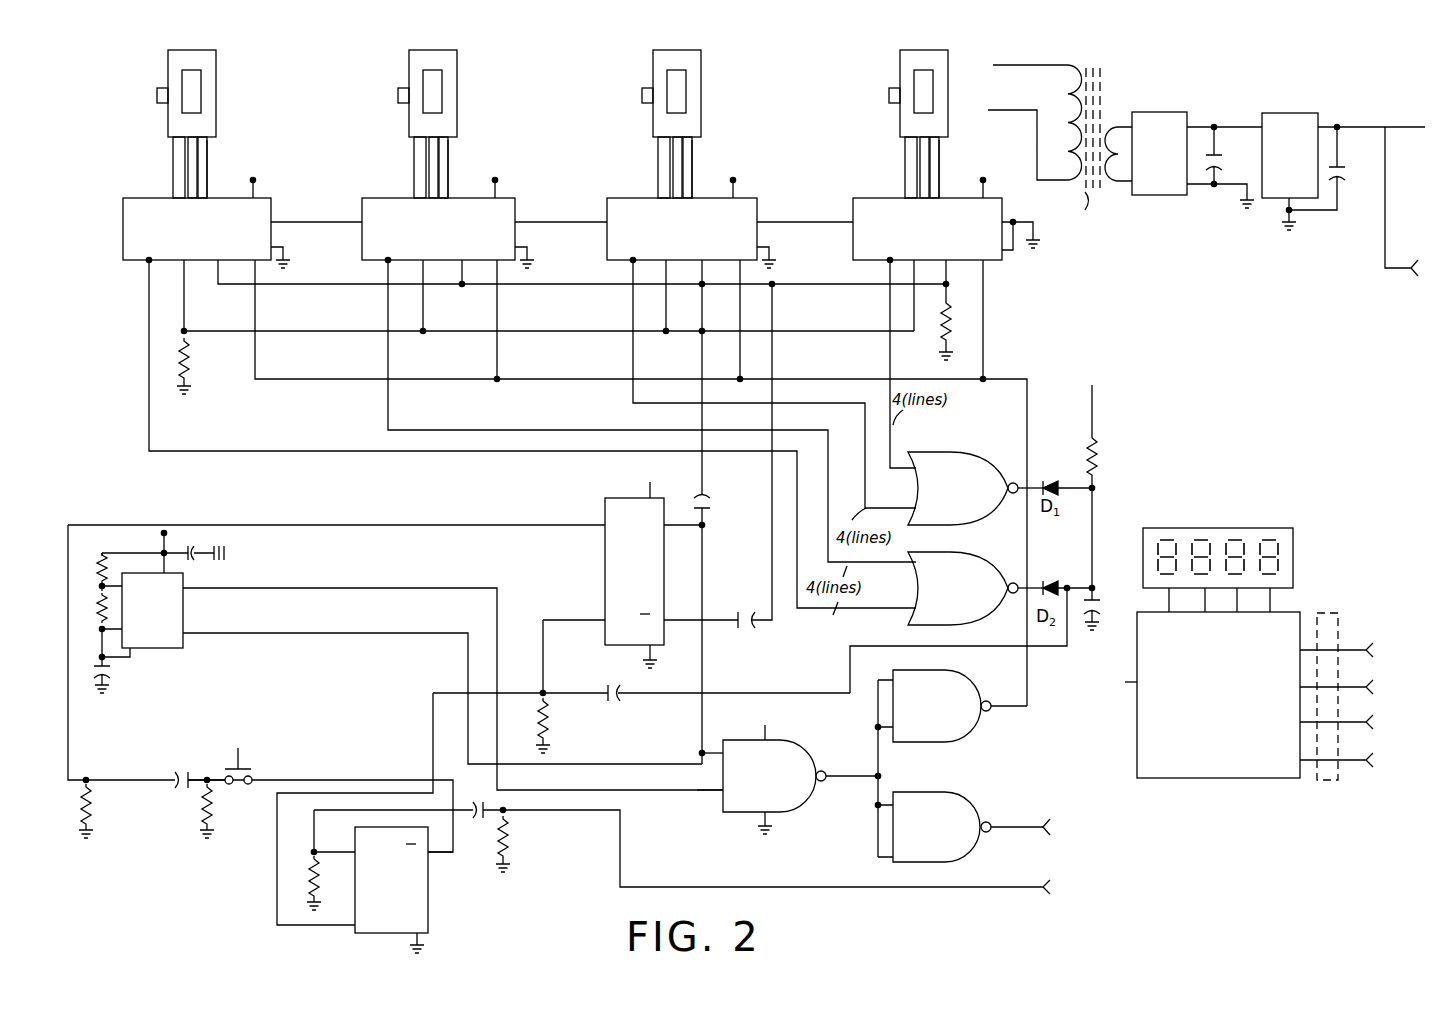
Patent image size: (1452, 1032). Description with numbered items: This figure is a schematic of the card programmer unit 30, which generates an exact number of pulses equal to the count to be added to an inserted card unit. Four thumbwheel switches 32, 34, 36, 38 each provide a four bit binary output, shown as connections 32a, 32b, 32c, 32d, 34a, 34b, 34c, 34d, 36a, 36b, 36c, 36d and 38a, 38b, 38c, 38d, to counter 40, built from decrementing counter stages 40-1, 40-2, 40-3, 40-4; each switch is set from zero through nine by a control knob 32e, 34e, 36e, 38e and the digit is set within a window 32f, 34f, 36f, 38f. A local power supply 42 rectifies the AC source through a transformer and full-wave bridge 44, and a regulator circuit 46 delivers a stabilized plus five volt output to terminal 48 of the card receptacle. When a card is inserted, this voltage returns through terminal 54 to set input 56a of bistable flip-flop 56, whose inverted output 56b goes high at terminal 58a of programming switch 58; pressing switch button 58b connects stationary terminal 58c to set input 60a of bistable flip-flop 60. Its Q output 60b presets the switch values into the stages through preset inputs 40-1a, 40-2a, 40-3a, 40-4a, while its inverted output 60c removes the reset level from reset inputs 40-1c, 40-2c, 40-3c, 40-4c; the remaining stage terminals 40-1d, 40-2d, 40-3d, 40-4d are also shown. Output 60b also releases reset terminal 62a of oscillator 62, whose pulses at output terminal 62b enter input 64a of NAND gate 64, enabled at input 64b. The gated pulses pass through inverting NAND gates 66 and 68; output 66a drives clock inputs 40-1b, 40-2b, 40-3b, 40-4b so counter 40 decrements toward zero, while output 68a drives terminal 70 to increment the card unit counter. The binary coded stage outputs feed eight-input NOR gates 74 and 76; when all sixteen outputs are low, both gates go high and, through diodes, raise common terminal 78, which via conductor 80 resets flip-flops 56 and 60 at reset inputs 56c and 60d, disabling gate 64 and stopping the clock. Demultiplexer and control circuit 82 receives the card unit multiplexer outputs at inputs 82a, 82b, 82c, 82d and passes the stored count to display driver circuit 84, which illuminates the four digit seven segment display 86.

The card programmer unit 30 is at (816, 82).
The thumbwheel switch 32 is at (216, 86).
The switch lead 32a is at (176, 150).
The switch lead 32b is at (178, 167).
The switch lead 32c is at (208, 151).
The switch lead 32d is at (210, 172).
The control knob 32e is at (162, 88).
The window 32f is at (197, 70).
The thumbwheel switch 34 is at (457, 86).
The switch lead 34a is at (417, 150).
The switch lead 34b is at (419, 167).
The switch lead 34c is at (449, 151).
The switch lead 34d is at (451, 172).
The switch actuator 34e is at (403, 88).
The switch display window 34f is at (438, 70).
The thumbwheel switch 36 is at (701, 86).
The switch lead 36a is at (661, 150).
The switch lead 36b is at (663, 167).
The switch lead 36c is at (693, 151).
The switch lead 36d is at (695, 172).
The switch actuator 36e is at (647, 88).
The switch display window 36f is at (682, 70).
The thumbwheel switch 38 is at (900, 62).
The switch lead 38a is at (908, 150).
The switch lead 38b is at (910, 167).
The switch lead 38c is at (940, 151).
The switch lead 38d is at (942, 172).
The switch actuator 38e is at (889, 99).
The switch display window 38f is at (929, 70).
The counter 40 is at (118, 233).
The counter stage 40-1 is at (551, 436).
The preset input 40-1a is at (182, 273).
The clock input 40-1b is at (257, 272).
The reset input 40-1c is at (216, 272).
The counter output line 40-1d is at (148, 333).
The counter stage 40-2 is at (617, 364).
The preset input 40-2a is at (421, 268).
The clock input 40-2b is at (499, 272).
The reset input 40-2c is at (460, 273).
The counter output line 40-2d is at (387, 361).
The counter stage 40-3 is at (740, 337).
The preset input 40-3a is at (664, 268).
The clock input 40-3b is at (744, 265).
The reset input 40-3c is at (702, 273).
The counter output line 40-3d is at (632, 358).
The counter stage 40-4 is at (941, 317).
The preset input 40-4a is at (912, 270).
The clock input 40-4b is at (985, 268).
The reset input 40-4c is at (949, 272).
The counter output line 40-4d is at (889, 353).
The local power supply 42 is at (1180, 104).
The full-wave bridge 44 is at (1170, 178).
The type 7805 circuit 46 is at (1274, 132).
The terminal 48 is at (1396, 266).
The terminal 54 is at (1027, 887).
The bistable flip-flop 56 is at (420, 893).
The set input 56a is at (325, 852).
The Q-bar output 56b is at (442, 853).
The reset input 56c is at (340, 928).
The programming switch 58 is at (198, 722).
The terminal 58a is at (255, 778).
The switch button 58b is at (242, 756).
The stationary terminal 58c is at (212, 770).
The bistable flip-flop 60 is at (598, 549).
The set input 60a is at (593, 524).
The Q output 60b is at (703, 528).
The Q-bar output 60c is at (685, 620).
The reset input 60d is at (589, 620).
The oscillator 62 is at (184, 584).
The reset terminal 62a is at (205, 636).
The output terminal 62b is at (193, 591).
The NAND gate 64 is at (785, 803).
The input 64a is at (702, 793).
The input 64b is at (705, 751).
The NAND gate 66 is at (955, 677).
The output 66a is at (1027, 678).
The NAND gate 68 is at (945, 802).
The output 68a is at (1000, 823).
The terminal 70 is at (1047, 825).
The eight-input NOR gate 74 is at (968, 470).
The eight-input NOR gate 76 is at (970, 572).
The common terminal 78 is at (1095, 492).
The conductor 80 is at (818, 690).
The demultiplexer and control circuit 82 is at (1320, 610).
The input 82a is at (1345, 648).
The input 82b is at (1340, 686).
The input 82c is at (1340, 722).
The input 82d is at (1345, 762).
The display driver circuit 84 is at (1195, 695).
The four digit display 86 is at (1210, 527).